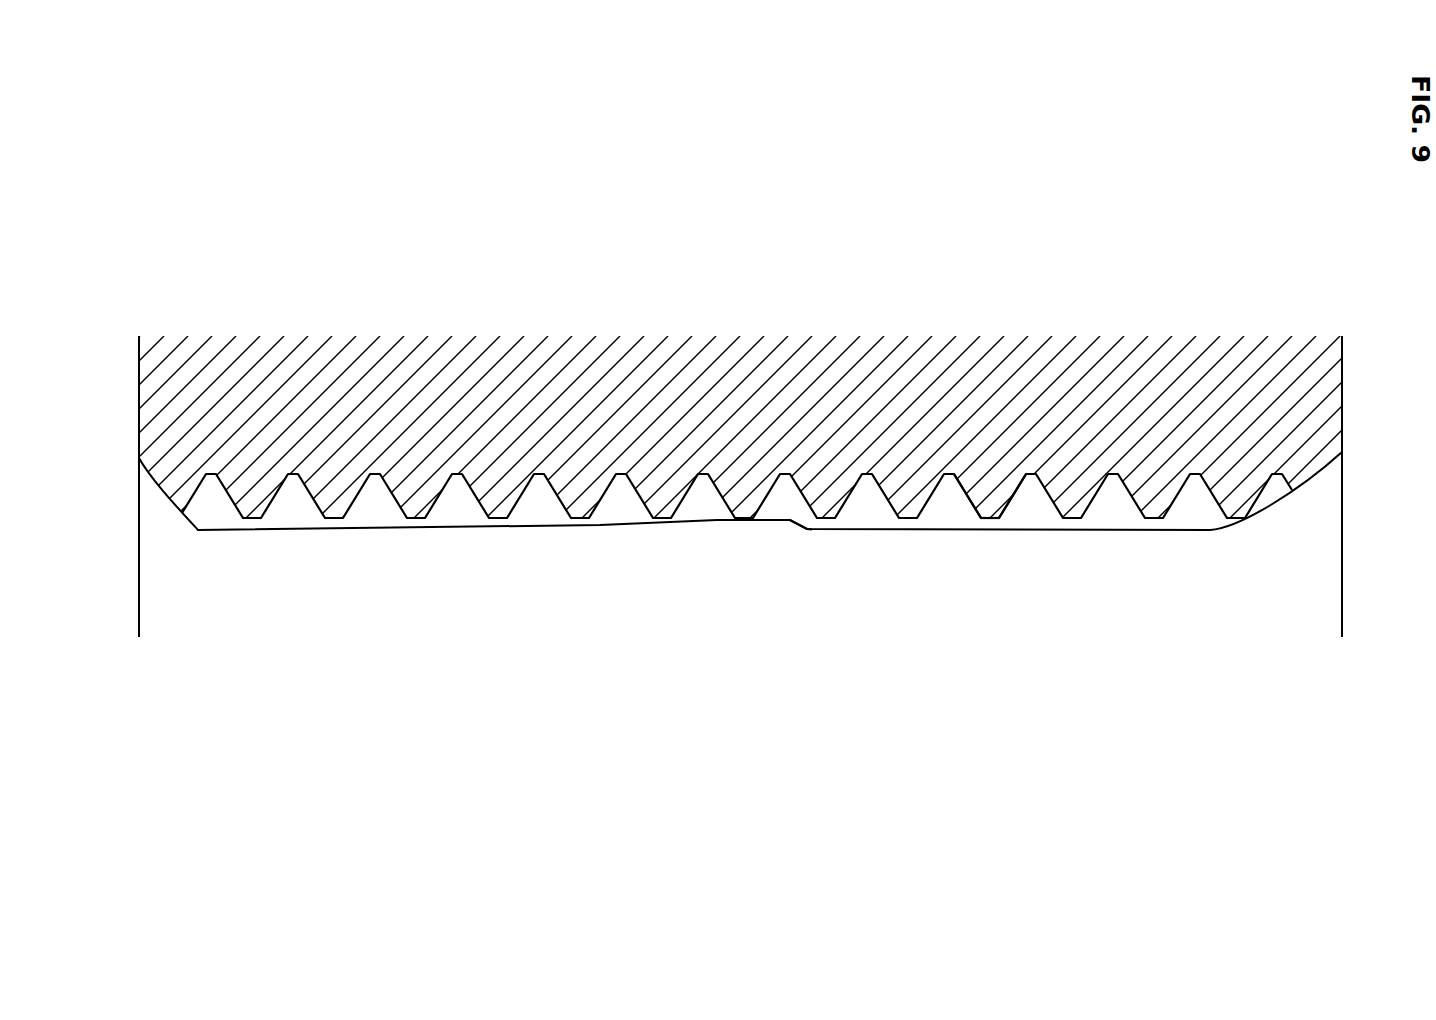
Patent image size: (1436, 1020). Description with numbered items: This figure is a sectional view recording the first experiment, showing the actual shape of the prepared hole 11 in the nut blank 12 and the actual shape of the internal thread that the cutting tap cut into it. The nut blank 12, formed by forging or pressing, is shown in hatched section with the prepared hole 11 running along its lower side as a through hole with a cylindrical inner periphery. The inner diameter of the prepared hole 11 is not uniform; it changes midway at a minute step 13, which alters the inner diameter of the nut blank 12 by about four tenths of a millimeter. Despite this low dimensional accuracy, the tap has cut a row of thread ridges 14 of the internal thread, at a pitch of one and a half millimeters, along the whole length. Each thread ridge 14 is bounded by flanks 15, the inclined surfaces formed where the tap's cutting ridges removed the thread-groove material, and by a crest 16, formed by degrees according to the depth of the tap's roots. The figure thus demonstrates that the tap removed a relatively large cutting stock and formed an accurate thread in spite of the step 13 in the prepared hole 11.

The prepared hole 11 is at (622, 525).
The nut blank 12 is at (358, 373).
The minute step 13 is at (797, 523).
The thread ridges of the internal thread 14 is at (665, 500).
The flanks 15 is at (967, 497).
The crests 16 is at (987, 520).